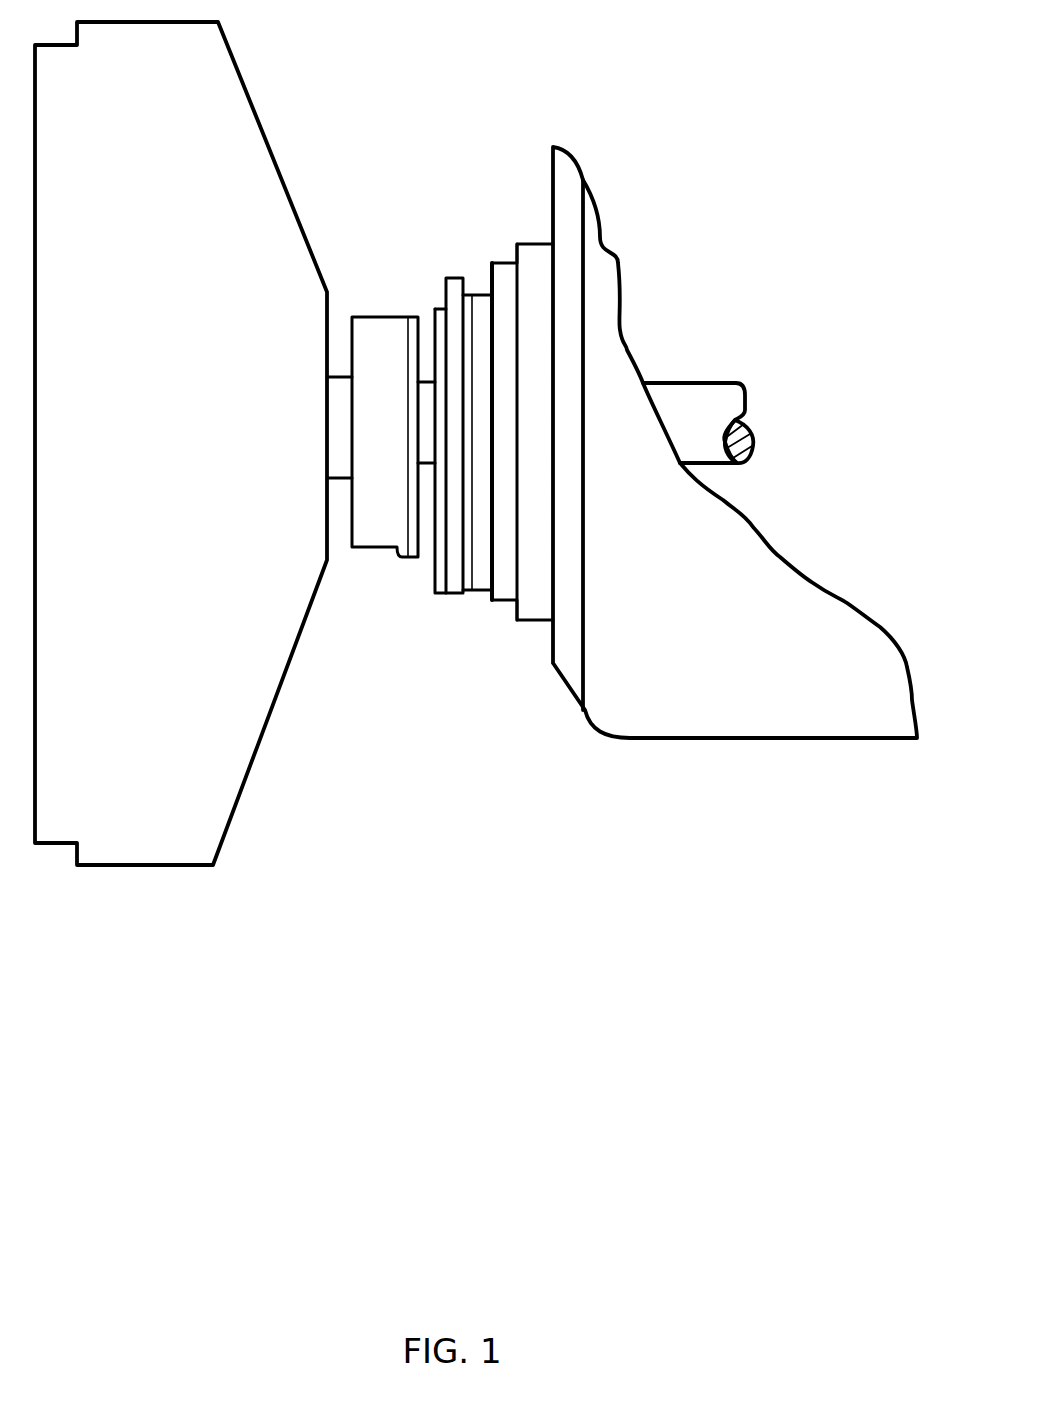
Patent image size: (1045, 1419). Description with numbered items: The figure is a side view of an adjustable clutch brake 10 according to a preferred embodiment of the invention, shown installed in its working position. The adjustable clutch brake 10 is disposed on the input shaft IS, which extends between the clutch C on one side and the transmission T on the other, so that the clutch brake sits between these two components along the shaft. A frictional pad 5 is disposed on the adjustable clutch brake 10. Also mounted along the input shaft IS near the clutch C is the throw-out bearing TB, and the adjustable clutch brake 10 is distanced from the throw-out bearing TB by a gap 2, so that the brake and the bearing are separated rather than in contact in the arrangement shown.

The clutch C is at (252, 189).
The throw-out bearing TB is at (385, 528).
The gap 2 is at (428, 547).
The adjustable clutch brake 10 is at (452, 611).
The frictional pad 5 is at (473, 598).
The transmission T is at (830, 627).
The input shaft IS is at (692, 400).